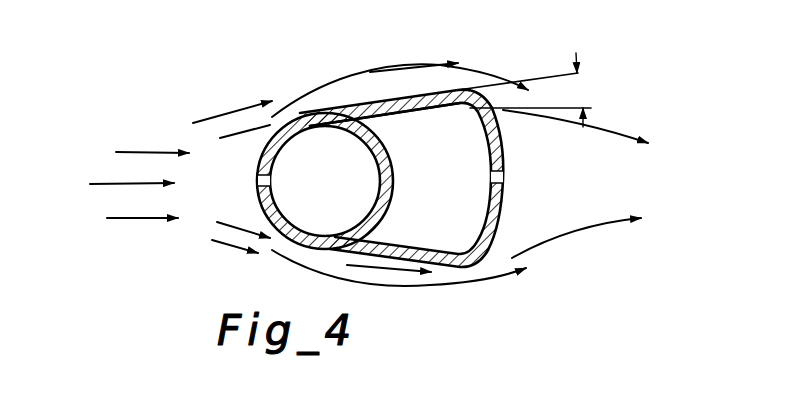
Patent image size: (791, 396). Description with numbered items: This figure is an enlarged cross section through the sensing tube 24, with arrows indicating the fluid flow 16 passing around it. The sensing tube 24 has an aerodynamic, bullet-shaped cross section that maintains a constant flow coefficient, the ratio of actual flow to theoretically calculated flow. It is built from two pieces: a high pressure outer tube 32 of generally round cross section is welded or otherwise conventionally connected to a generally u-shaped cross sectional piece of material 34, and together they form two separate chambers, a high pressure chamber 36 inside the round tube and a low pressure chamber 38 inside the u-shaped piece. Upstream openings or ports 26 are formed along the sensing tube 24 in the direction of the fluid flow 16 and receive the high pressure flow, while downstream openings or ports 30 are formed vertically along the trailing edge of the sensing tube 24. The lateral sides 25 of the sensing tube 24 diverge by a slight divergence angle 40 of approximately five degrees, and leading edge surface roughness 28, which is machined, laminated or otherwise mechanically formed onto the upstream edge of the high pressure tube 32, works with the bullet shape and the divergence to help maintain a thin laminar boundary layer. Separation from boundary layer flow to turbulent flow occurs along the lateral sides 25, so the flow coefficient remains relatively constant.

The fluid flow 16 is at (122, 152).
The sensing tube 24 is at (440, 268).
The lateral sides 25 is at (408, 97).
The upstream openings 26 is at (267, 181).
The leading edge surface roughness 28 is at (262, 163).
The downstream openings 30 is at (502, 182).
The high pressure outer tube 32 is at (306, 112).
The u-shaped cross sectional piece of material 34 is at (498, 225).
The high pressure chamber 36 is at (342, 184).
The low pressure chamber 38 is at (455, 202).
The divergence angle 40 is at (583, 100).